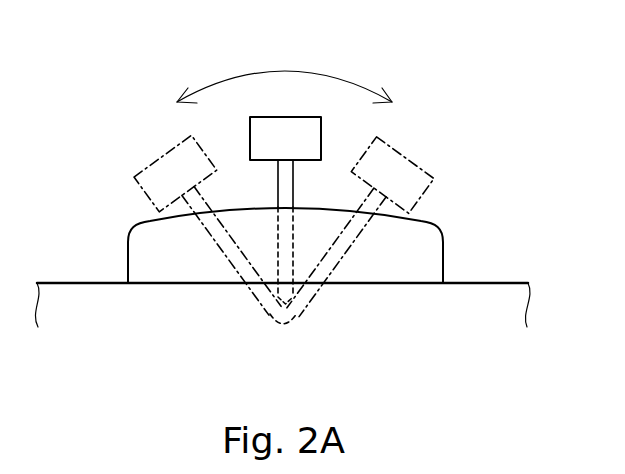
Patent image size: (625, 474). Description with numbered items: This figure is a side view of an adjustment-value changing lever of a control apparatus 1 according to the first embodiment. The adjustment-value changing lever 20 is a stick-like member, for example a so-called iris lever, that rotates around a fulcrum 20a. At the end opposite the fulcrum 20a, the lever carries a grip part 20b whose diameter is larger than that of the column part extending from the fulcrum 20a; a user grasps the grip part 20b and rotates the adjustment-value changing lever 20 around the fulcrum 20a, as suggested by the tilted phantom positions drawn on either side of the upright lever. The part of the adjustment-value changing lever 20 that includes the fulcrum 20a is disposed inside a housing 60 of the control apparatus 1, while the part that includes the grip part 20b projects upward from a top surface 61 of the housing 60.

The control apparatus 1 is at (277, 46).
The adjustment-value changing lever 20 is at (427, 105).
The fulcrum 20a is at (297, 318).
The grip part 20b is at (321, 145).
The housing 60 is at (475, 222).
The top surface 61 is at (430, 223).